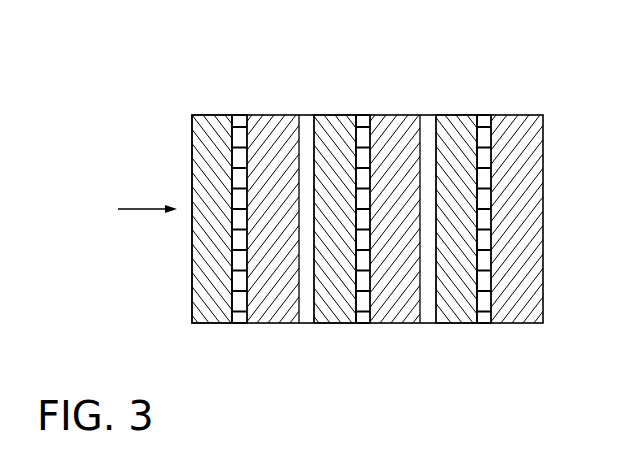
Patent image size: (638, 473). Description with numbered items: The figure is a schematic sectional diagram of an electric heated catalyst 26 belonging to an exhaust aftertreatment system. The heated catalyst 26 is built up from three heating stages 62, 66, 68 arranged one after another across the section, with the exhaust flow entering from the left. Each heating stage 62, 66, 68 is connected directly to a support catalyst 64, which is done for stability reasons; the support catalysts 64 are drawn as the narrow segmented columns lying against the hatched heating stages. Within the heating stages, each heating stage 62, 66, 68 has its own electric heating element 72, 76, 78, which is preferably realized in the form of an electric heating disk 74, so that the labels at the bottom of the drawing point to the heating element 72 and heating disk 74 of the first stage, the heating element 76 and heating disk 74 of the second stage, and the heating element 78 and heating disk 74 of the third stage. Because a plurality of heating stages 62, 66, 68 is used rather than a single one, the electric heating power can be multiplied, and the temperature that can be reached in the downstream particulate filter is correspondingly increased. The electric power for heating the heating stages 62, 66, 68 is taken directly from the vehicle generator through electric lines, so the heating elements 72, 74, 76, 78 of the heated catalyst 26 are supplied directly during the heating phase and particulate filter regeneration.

The electric heated catalyst 26 is at (236, 73).
The first heating stage 62 is at (210, 124).
The support catalyst 64 is at (265, 124).
The second heating stage 66 is at (332, 124).
The third heating stage 68 is at (457, 124).
The electric heating element 72 is at (208, 313).
The electric heating disk 74 is at (332, 223).
The electric heating element 76 is at (337, 313).
The electric heating element 78 is at (457, 313).